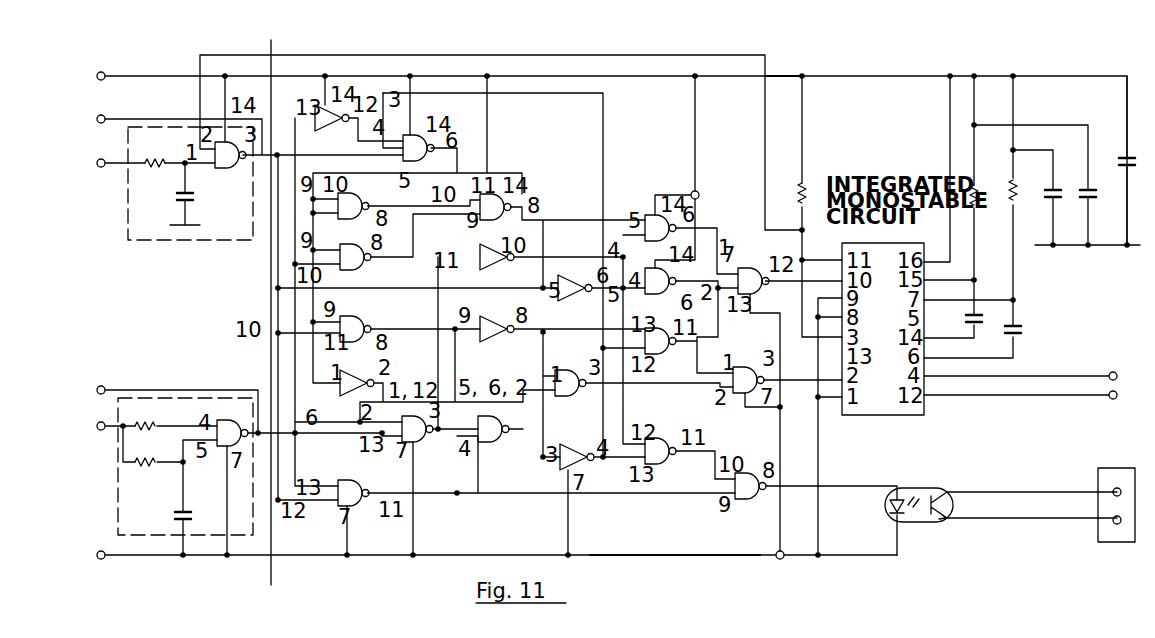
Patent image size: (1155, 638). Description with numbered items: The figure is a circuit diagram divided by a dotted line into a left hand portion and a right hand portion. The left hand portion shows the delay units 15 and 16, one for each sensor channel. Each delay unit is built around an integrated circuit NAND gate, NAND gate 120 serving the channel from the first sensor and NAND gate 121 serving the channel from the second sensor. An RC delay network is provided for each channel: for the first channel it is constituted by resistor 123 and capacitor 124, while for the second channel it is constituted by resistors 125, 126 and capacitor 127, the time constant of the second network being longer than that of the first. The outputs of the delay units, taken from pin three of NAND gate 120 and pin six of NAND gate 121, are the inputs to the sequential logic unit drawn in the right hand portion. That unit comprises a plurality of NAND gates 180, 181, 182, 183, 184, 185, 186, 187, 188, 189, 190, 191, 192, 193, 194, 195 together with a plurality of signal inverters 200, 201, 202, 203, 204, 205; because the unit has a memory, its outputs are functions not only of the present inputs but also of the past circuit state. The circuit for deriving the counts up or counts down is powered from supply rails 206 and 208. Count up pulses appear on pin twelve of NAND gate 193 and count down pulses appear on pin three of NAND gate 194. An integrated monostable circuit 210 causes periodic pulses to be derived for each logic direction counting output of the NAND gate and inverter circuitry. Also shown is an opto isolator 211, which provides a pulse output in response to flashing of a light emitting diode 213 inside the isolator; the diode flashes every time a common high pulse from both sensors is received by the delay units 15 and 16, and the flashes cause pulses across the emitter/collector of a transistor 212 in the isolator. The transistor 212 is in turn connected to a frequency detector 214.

The delay unit 15 is at (230, 231).
The delay unit 16 is at (250, 531).
The NAND gate 120 is at (238, 180).
The NAND gate 121 is at (228, 426).
The resistor 123 is at (171, 158).
The capacitor 124 is at (183, 195).
The resistor 125 is at (165, 426).
The resistor 126 is at (165, 460).
The capacitor 127 is at (180, 510).
The NAND gate 180 is at (418, 152).
The NAND gate 181 is at (355, 204).
The NAND gate 182 is at (370, 262).
The NAND gate 183 is at (482, 218).
The NAND gate 184 is at (352, 318).
The NAND gate 185 is at (418, 444).
The NAND gate 186 is at (344, 468).
The NAND gate 187 is at (495, 444).
The NAND gate 188 is at (572, 372).
The NAND gate 189 is at (672, 243).
The NAND gate 190 is at (668, 294).
The NAND gate 191 is at (668, 352).
The NAND gate 192 is at (664, 466).
The NAND gate 193 is at (758, 288).
The NAND gate 194 is at (746, 352).
The NAND gate 195 is at (738, 478).
The signal inverter 200 is at (328, 124).
The signal inverter 201 is at (369, 374).
The signal inverter 202 is at (490, 260).
The signal inverter 203 is at (496, 338).
The signal inverter 204 is at (568, 270).
The signal inverter 205 is at (576, 448).
The supply rail 206 is at (863, 66).
The supply rail 208 is at (666, 565).
The integrated monostable circuit 210 is at (900, 333).
The opto isolator 211 is at (930, 470).
The transistor 212 is at (937, 516).
The light emitting diode 213 is at (888, 510).
The frequency detector 214 is at (1112, 464).